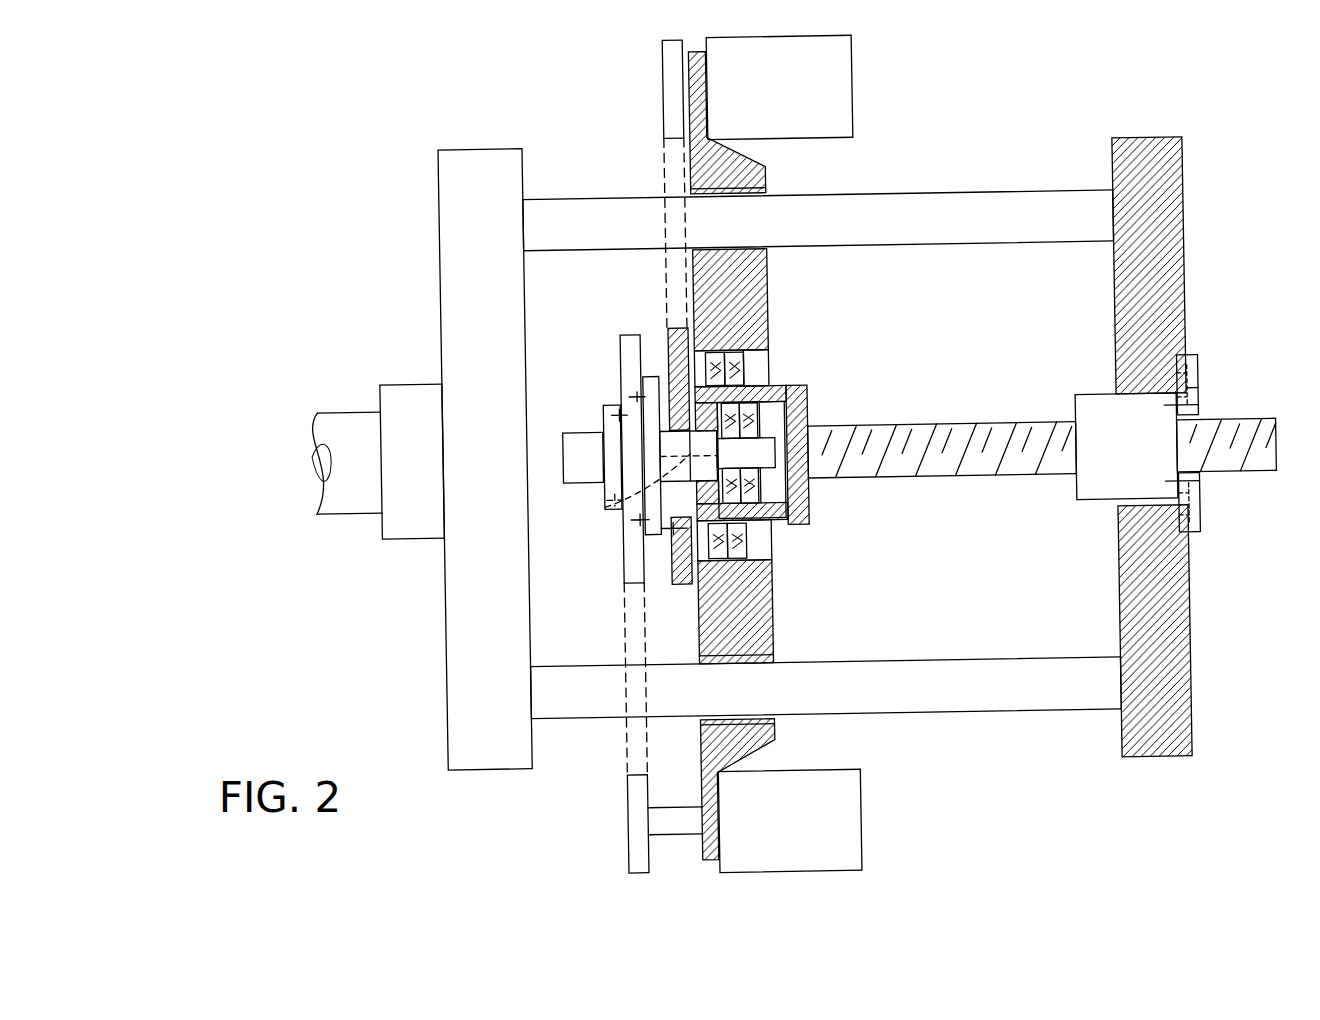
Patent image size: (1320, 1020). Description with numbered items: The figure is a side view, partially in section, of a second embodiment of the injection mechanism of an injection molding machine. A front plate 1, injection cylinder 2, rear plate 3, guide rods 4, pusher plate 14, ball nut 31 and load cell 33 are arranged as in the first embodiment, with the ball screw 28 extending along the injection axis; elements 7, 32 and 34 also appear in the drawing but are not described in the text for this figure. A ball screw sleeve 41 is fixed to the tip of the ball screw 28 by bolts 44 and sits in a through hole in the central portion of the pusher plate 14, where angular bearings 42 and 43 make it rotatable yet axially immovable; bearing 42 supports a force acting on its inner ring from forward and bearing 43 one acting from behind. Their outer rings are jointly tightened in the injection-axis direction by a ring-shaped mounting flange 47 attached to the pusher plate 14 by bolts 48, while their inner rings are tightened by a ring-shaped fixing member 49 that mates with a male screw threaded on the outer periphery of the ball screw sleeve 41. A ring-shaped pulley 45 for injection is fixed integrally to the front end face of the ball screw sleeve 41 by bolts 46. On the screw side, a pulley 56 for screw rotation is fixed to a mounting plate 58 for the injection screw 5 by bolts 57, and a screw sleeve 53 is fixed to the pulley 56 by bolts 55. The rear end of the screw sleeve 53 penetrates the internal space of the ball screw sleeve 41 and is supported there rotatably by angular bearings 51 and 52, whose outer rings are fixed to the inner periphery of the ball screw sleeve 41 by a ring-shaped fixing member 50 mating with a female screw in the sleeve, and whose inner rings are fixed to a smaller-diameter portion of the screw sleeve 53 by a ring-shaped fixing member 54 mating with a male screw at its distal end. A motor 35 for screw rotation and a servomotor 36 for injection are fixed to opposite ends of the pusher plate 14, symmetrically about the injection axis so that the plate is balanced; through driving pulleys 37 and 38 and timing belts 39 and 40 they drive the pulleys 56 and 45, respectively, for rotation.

The front plate 1 is at (447, 665).
The injection cylinder 2 is at (358, 505).
The rear plate 3 is at (1170, 600).
The guide rods 4 is at (978, 197).
The injection screw 5 is at (545, 478).
The mounting flange 7 is at (752, 180).
The pusher plate 14 is at (757, 644).
The ball screw 28 is at (958, 480).
The ball nut 31 is at (1097, 495).
The bracket 32 is at (1178, 360).
The load cell 33 is at (1196, 390).
The bracket holder 34 is at (1194, 412).
The motor for screw rotation 35 is at (848, 822).
The motor for injection 36 is at (848, 75).
The driving pulley 37 is at (632, 838).
The driving pulley 38 is at (669, 72).
The timing belt 39 is at (630, 758).
The timing belt 40 is at (663, 175).
The ball screw sleeve 41 is at (778, 398).
The angular bearing 42 is at (690, 355).
The angular bearing 43 is at (765, 330).
The bolts 44 is at (795, 395).
The pulley for injection 45 is at (676, 583).
The bolts 46 is at (670, 528).
The mounting flange 47 is at (730, 362).
The bolts 48 is at (707, 352).
The fixing member 49 is at (755, 536).
The fixing member 50 is at (762, 506).
The angular bearing 51 is at (770, 404).
The angular bearing 52 is at (750, 418).
The screw sleeve 53 is at (604, 498).
The fixing member 54 is at (765, 487).
The bolts 55 is at (640, 396).
The pulley for screw rotation 56 is at (626, 350).
The bolts 57 is at (640, 518).
The mounting plate 58 is at (563, 449).